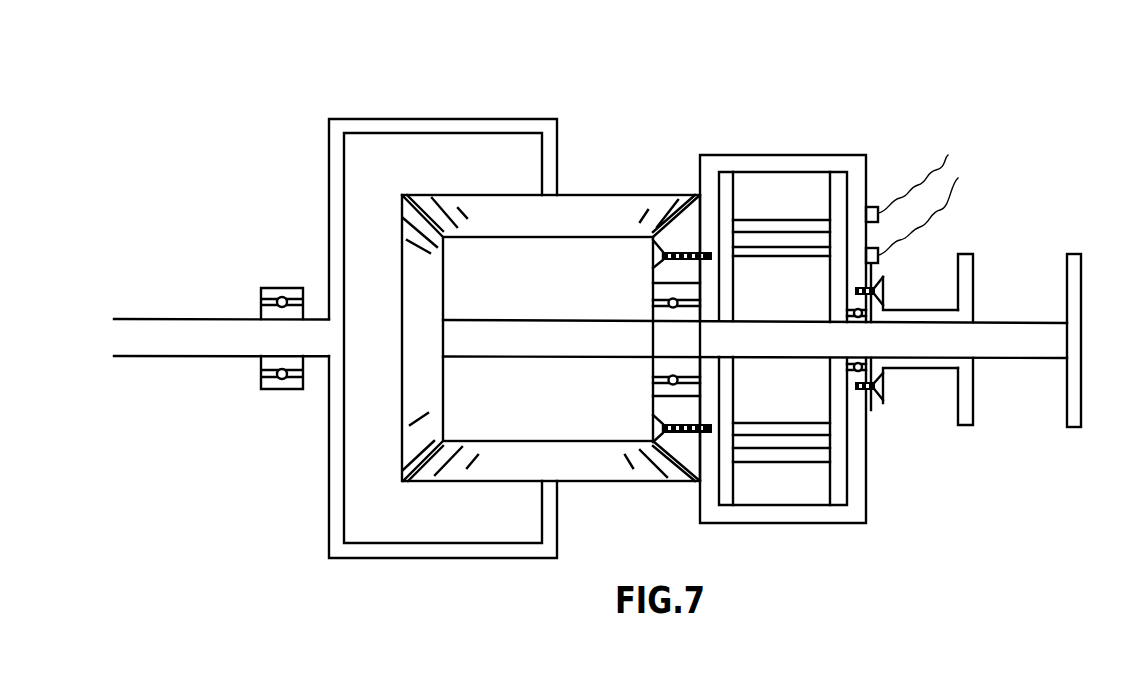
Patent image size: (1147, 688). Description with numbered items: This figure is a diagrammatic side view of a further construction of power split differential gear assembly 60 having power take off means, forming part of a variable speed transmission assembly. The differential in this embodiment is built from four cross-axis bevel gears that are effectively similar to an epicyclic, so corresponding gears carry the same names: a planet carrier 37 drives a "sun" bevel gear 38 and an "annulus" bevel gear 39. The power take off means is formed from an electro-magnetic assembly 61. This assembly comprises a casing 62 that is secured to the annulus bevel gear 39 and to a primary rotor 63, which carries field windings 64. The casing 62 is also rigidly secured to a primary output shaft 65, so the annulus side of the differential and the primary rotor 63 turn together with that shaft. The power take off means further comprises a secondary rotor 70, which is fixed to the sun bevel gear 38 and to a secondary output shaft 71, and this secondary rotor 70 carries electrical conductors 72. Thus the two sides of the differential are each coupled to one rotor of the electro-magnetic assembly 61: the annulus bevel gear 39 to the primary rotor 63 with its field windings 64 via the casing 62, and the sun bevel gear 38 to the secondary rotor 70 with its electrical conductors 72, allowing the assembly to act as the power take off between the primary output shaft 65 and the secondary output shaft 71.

The planet carrier 37 is at (588, 205).
The sun gear 38 is at (446, 298).
The annulus gear 39 is at (652, 378).
The power split differential gear assembly 60 is at (609, 284).
The electro-magnetic assembly 61 is at (917, 299).
The casing 62 is at (860, 505).
The primary rotor 63 is at (788, 193).
The field windings 64 is at (818, 230).
The primary output shaft 65 is at (975, 255).
The secondary rotor 70 is at (799, 347).
The secondary output shaft 71 is at (1083, 293).
The electrical conductors 72 is at (823, 432).